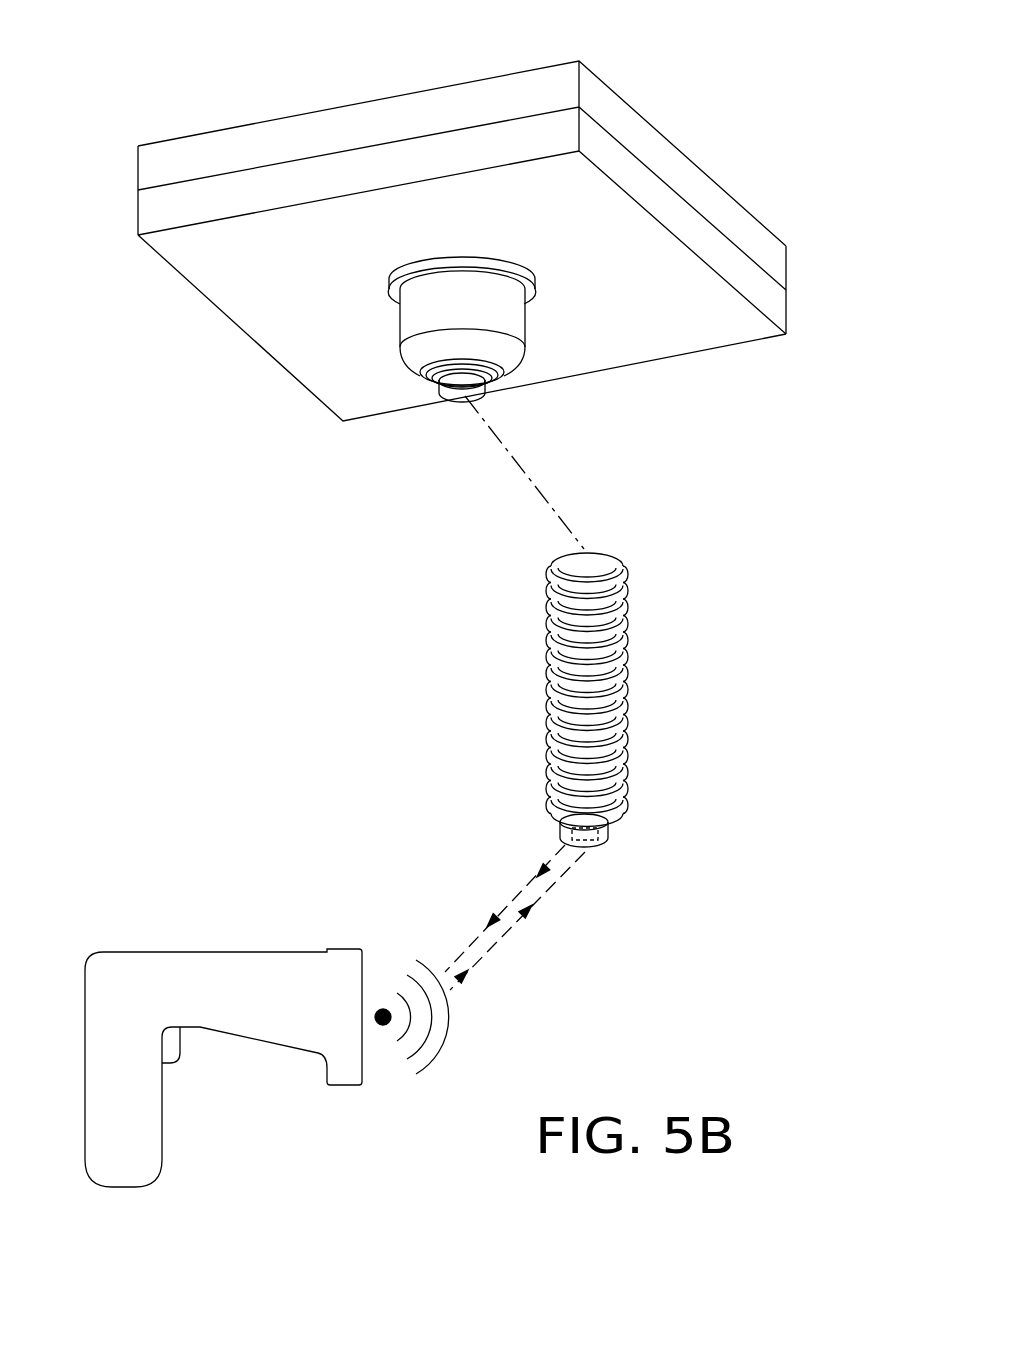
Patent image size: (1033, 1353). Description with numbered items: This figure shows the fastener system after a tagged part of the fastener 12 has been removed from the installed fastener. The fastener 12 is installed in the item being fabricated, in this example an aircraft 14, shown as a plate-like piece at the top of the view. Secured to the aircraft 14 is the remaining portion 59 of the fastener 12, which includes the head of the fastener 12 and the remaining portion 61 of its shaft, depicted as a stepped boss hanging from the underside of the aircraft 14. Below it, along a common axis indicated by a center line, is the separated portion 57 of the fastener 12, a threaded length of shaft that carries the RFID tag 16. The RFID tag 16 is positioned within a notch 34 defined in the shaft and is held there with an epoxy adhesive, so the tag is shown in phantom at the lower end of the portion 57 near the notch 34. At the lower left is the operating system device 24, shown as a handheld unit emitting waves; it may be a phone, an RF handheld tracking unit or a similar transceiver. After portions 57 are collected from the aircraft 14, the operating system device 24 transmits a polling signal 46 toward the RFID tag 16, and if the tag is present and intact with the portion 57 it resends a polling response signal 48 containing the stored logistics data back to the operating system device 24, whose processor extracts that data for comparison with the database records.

The aircraft 14 is at (555, 82).
The remaining portion of fastener 59 is at (535, 327).
The remaining portion of shaft 61 is at (502, 394).
The fastener 12 is at (419, 543).
The portion of fastener 57 is at (626, 660).
The notch 34 is at (599, 845).
The RFID tag 16 is at (562, 838).
The polling response signal 48 is at (509, 902).
The polling signal 46 is at (511, 927).
The operating system device 24 is at (198, 968).